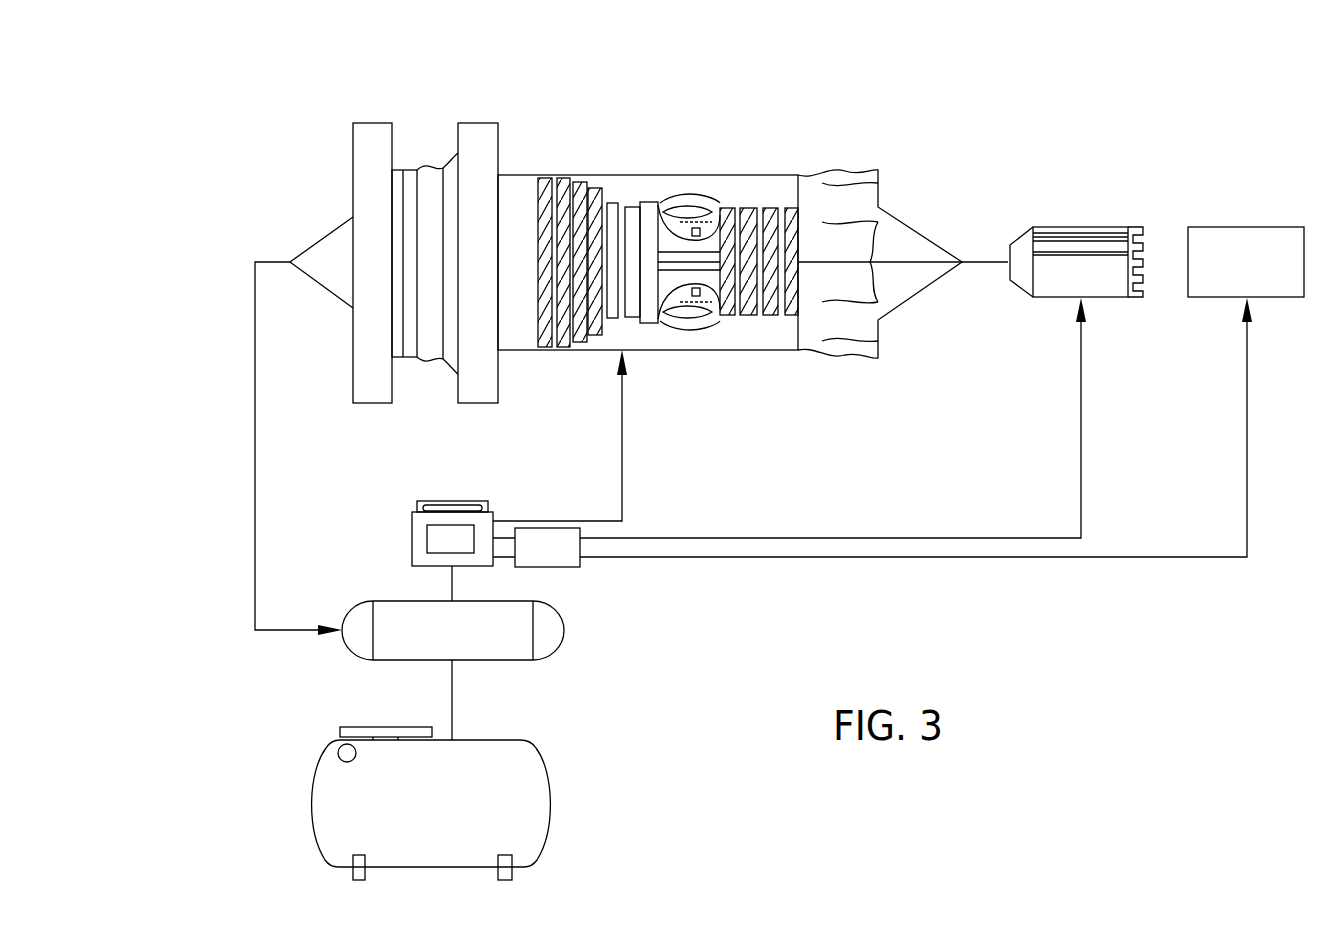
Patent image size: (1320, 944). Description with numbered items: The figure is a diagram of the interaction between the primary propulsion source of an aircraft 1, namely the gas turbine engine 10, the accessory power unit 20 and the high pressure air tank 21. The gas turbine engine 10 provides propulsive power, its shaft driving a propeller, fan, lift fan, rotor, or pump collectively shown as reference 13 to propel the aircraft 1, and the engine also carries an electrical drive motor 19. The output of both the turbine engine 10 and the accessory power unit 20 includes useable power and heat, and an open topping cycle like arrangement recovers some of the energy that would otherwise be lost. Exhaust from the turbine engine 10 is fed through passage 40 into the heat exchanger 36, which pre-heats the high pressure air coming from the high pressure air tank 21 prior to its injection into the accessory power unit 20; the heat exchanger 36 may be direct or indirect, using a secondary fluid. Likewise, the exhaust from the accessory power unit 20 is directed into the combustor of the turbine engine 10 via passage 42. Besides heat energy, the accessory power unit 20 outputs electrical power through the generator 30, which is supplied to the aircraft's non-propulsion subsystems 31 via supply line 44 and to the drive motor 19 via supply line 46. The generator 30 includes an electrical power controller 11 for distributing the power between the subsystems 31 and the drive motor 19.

The aircraft 1 is at (150, 100).
The gas turbine engine 10 is at (972, 74).
The propeller, fan, lift fan, rotor, or pump 13 is at (370, 123).
The electrical drive motor 19 is at (1087, 227).
The non-propulsion subsystems 31 is at (1243, 227).
The accessory power unit 20 is at (447, 501).
The electrical generator 30 is at (450, 539).
The electrical power controller 11 is at (536, 547).
The passage 42 is at (622, 490).
The supply line 46 is at (1081, 395).
The supply line 44 is at (1247, 395).
The passage 40 is at (255, 530).
The heat exchanger 36 is at (563, 630).
The high pressure air tank 21 is at (548, 800).